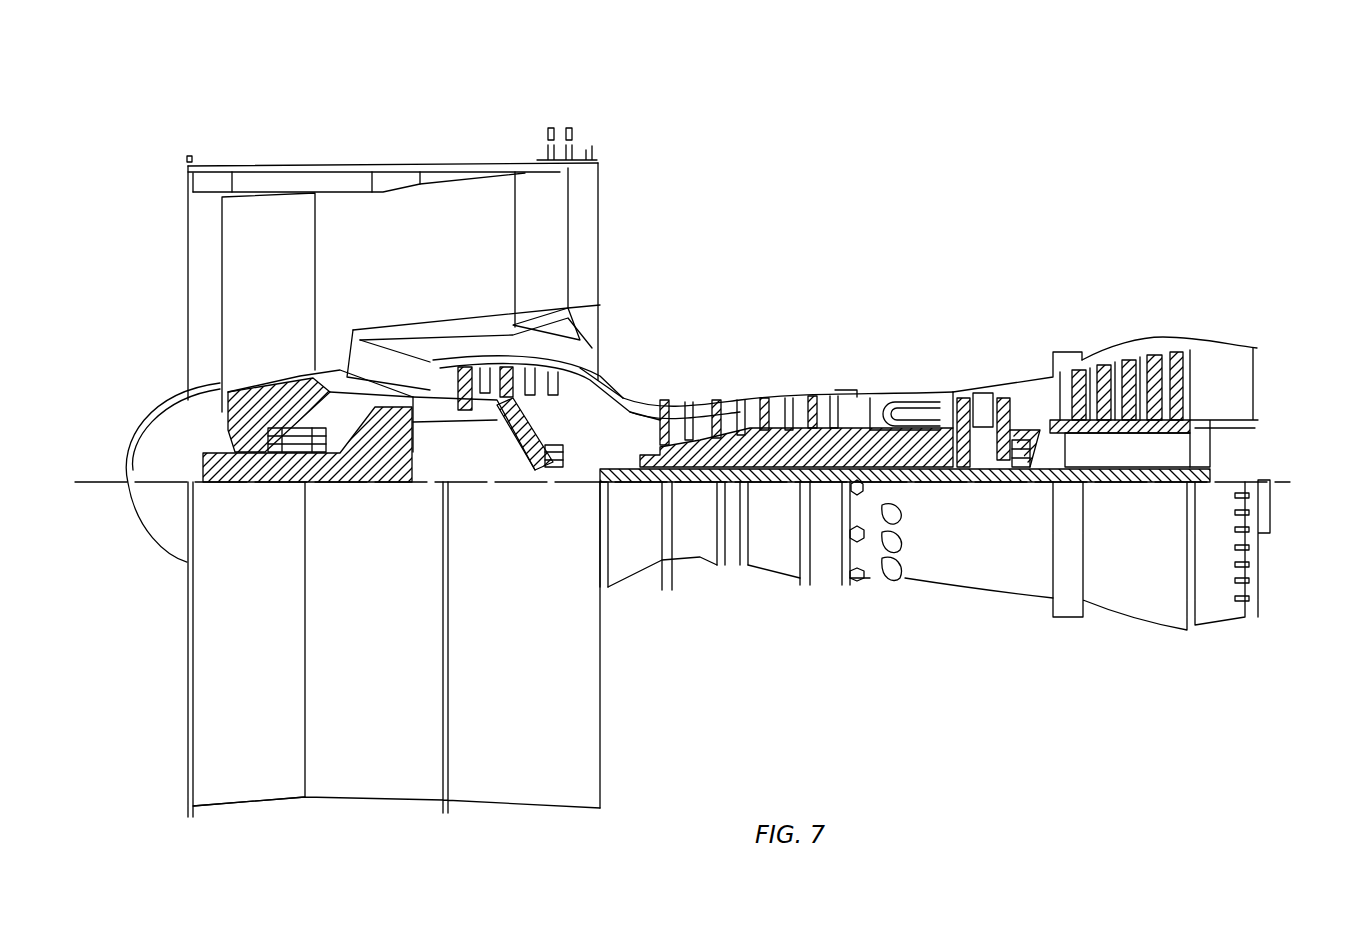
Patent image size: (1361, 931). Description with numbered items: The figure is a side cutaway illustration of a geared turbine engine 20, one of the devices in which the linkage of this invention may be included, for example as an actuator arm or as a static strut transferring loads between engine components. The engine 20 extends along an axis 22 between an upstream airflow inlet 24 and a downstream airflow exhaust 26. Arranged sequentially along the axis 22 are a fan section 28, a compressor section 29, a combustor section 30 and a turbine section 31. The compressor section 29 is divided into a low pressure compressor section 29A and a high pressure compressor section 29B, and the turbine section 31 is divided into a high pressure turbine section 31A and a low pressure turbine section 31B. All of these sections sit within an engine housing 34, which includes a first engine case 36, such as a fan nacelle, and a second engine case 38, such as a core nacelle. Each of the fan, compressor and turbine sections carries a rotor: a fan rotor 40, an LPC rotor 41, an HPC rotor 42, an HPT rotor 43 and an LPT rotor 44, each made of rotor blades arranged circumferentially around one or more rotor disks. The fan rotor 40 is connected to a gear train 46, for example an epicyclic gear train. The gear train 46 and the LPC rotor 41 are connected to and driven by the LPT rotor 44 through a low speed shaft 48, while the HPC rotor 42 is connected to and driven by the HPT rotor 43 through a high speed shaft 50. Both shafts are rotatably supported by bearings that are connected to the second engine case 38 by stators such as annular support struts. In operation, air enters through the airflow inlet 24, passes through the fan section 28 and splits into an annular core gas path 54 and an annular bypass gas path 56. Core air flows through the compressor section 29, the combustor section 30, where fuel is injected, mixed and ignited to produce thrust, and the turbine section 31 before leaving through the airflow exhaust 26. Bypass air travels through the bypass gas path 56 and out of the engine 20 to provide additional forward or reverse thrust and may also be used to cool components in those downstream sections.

The geared turbine engine 20 is at (138, 130).
The axis 22 is at (1297, 481).
The airflow inlet 24 is at (187, 213).
The airflow exhaust 26 is at (1258, 378).
The fan section 28 is at (360, 140).
The compressor section 29 is at (825, 70).
The low pressure compressor section 29A is at (600, 128).
The high pressure compressor section 29B is at (823, 296).
The combustor section 30 is at (948, 296).
The turbine section 31 is at (1215, 228).
The high pressure turbine section 31A is at (1032, 296).
The low pressure turbine section 31B is at (1215, 296).
The engine housing 34 is at (630, 632).
The first engine case 36 is at (530, 806).
The second engine case 38 is at (827, 577).
The fan rotor 40 is at (227, 407).
The LPC rotor 41 is at (510, 422).
The HPC rotor 42 is at (777, 443).
The HPT rotor 43 is at (980, 462).
The LPT rotor 44 is at (1130, 427).
The gear train 46 is at (402, 473).
The low speed shaft 48 is at (1138, 482).
The high speed shaft 50 is at (913, 470).
The core gas path 54 is at (622, 399).
The bypass gas path 56 is at (423, 268).